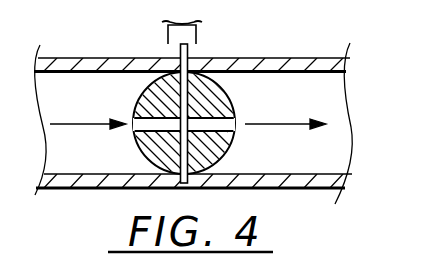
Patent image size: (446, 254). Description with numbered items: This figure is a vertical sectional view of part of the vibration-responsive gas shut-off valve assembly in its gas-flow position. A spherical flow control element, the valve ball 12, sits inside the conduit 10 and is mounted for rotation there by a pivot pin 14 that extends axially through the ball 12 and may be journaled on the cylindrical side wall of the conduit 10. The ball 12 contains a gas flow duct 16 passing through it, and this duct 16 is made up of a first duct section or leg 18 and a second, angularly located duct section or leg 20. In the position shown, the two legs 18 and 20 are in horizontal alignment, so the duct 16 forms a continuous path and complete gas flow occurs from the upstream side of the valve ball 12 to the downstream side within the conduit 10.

The conduit 10 is at (285, 57).
The spherical flow control element 12 is at (185, 126).
The pivot pin 14 is at (209, 66).
The gas flow duct 16 is at (146, 150).
The first duct section or leg 18 is at (145, 100).
The second angularly located duct section or leg 20 is at (228, 137).